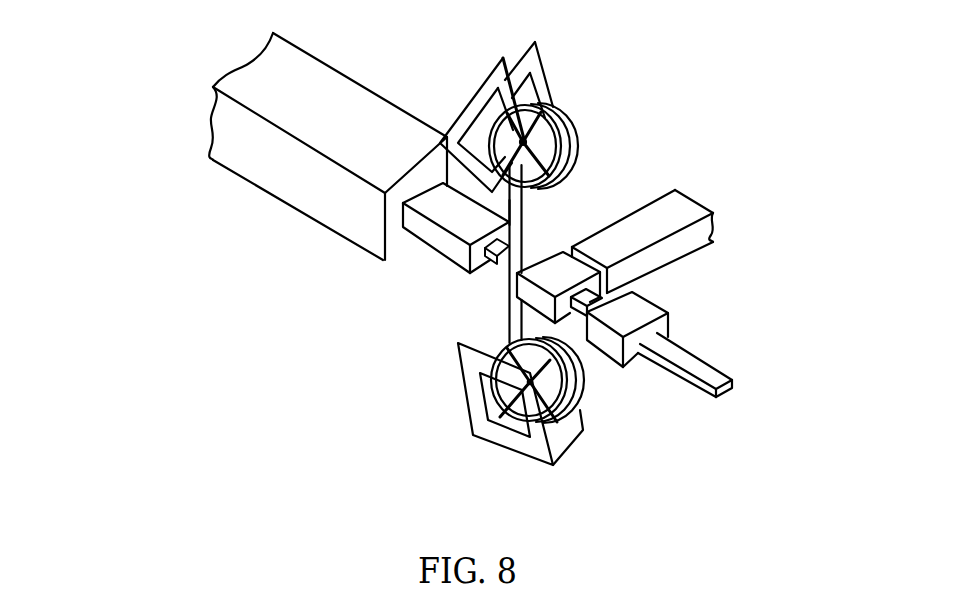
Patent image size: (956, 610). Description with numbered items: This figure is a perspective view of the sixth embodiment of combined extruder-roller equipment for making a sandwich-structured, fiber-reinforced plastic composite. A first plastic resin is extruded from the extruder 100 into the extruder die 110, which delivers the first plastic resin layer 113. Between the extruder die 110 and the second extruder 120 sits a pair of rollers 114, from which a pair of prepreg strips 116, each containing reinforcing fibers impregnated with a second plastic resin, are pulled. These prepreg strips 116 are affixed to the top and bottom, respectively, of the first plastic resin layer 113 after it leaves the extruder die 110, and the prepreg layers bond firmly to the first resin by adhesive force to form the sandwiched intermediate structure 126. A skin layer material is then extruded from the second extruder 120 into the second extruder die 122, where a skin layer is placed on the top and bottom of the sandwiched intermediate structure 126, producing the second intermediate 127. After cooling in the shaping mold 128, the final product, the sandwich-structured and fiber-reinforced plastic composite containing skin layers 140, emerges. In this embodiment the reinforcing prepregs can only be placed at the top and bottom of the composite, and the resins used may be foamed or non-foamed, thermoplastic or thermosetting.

The extruder 100 is at (300, 112).
The extruder die 110 is at (428, 240).
The first plastic resin layer 113 is at (493, 261).
The rollers 114 is at (566, 115).
The prepreg strips 116 is at (522, 210).
The second extruder 120 is at (653, 223).
The second extruder die 122 is at (518, 304).
The sandwiched intermediate structure 126 is at (520, 257).
The second intermediate 127 is at (607, 292).
The shaping mold 128 is at (647, 312).
The sandwich-structured and fiber-reinforced plastic composite containing skin layer 140 is at (697, 360).